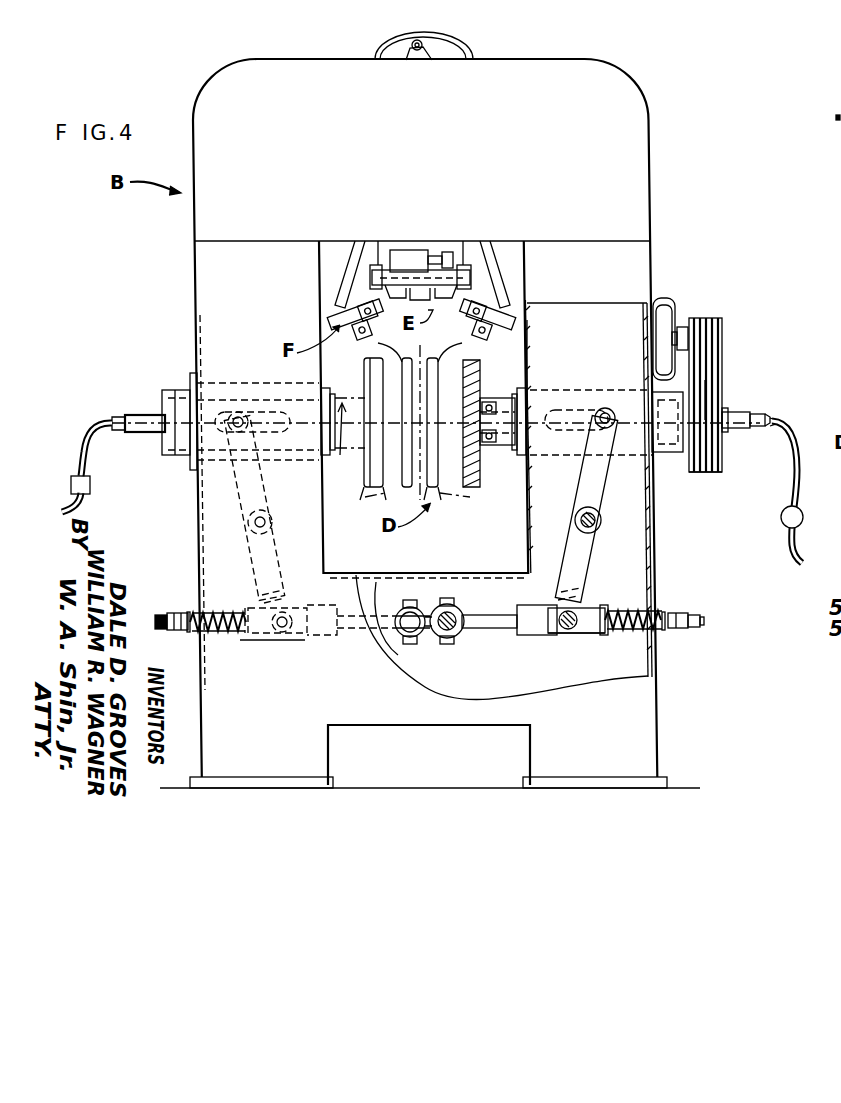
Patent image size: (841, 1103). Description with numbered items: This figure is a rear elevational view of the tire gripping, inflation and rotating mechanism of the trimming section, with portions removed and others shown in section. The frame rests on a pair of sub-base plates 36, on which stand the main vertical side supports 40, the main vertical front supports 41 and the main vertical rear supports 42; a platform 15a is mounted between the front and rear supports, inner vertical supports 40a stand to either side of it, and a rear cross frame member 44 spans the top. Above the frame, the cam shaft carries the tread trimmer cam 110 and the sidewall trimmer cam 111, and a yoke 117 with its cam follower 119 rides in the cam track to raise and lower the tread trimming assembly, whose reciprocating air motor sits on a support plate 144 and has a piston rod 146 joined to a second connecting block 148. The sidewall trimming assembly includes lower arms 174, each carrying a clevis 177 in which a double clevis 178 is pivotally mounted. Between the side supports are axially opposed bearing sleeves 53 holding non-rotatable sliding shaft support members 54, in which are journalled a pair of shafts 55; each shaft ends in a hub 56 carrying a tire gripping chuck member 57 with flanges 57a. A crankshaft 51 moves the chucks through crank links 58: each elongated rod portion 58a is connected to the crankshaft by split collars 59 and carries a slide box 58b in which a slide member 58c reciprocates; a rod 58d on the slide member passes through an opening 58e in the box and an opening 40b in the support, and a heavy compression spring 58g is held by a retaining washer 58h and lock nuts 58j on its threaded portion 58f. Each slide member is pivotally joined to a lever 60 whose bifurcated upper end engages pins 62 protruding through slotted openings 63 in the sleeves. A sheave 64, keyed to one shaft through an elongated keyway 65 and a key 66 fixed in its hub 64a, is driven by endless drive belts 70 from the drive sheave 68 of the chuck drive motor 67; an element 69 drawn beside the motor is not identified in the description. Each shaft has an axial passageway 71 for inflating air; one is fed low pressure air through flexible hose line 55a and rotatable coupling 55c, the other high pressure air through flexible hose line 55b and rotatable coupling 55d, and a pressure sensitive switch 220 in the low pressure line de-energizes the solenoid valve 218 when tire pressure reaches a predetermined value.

The sub-base plates 36 is at (333, 779).
The tread trimmer cam 110 is at (385, 55).
The sidewall trimmer cam 111 is at (462, 55).
The cam follower 119 is at (410, 60).
The yoke 117 is at (432, 60).
The rear cross frame member 44 is at (436, 156).
The platform 15a is at (424, 577).
The support plate 144 is at (414, 250).
The piston rod 146 is at (438, 256).
The second connecting block 148 is at (448, 252).
The lower arm 174 is at (353, 246).
The double clevis 178 is at (344, 312).
The clevis 177 is at (503, 311).
The main vertical rear supports 42 is at (273, 271).
The main vertical front supports 41 is at (607, 334).
The main vertical side supports 40 is at (205, 488).
The inner vertical supports 40a is at (528, 355).
The shafts 55 is at (142, 415).
The rotatable coupling 55c is at (110, 419).
The flexible hose line 55a is at (82, 452).
The pressure sensitive switch 220 is at (90, 485).
The axial passageway 71 is at (136, 415).
The rotatable coupling 55d is at (760, 414).
The flexible hose line 55b is at (792, 547).
The solenoid valve 218 is at (781, 517).
The bearing sleeves 53 is at (212, 383).
The pins 62 is at (238, 412).
The slotted openings 63 is at (248, 412).
The levers 60 is at (275, 502).
The sliding shaft support members 54 is at (360, 400).
The tire gripping chuck members 57 is at (402, 362).
The flanges 57a is at (375, 495).
The hub 56 is at (480, 455).
The chuck drive motor 67 is at (660, 300).
The drive sheave 68 is at (722, 340).
The motor shaft boss 69 is at (680, 327).
The sheave 64 is at (722, 465).
The hub 64a is at (680, 470).
The endless drive belts 70 is at (705, 382).
The key 66 is at (722, 395).
The elongated keyway 65 is at (728, 410).
The crank links 58 is at (489, 653).
The elongated rod portion 58a is at (380, 612).
The split collars 59 is at (390, 650).
The crankshaft 51 is at (425, 650).
The slide member 58c is at (262, 636).
The opening 58e is at (568, 633).
The slide box 58b is at (258, 645).
The heavy compression spring 58g is at (198, 612).
The rod 58d is at (249, 620).
The opening 40b is at (190, 612).
The retaining washer 58h is at (186, 613).
The threaded portion 58f is at (158, 629).
The lock nuts 58j is at (164, 630).